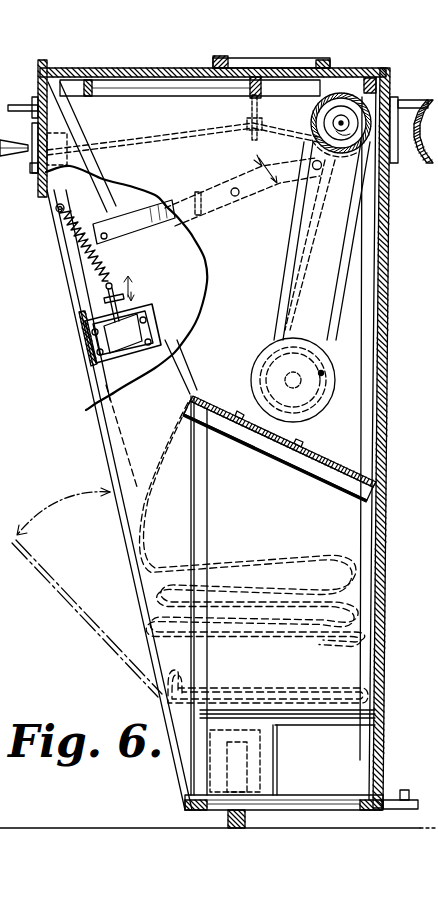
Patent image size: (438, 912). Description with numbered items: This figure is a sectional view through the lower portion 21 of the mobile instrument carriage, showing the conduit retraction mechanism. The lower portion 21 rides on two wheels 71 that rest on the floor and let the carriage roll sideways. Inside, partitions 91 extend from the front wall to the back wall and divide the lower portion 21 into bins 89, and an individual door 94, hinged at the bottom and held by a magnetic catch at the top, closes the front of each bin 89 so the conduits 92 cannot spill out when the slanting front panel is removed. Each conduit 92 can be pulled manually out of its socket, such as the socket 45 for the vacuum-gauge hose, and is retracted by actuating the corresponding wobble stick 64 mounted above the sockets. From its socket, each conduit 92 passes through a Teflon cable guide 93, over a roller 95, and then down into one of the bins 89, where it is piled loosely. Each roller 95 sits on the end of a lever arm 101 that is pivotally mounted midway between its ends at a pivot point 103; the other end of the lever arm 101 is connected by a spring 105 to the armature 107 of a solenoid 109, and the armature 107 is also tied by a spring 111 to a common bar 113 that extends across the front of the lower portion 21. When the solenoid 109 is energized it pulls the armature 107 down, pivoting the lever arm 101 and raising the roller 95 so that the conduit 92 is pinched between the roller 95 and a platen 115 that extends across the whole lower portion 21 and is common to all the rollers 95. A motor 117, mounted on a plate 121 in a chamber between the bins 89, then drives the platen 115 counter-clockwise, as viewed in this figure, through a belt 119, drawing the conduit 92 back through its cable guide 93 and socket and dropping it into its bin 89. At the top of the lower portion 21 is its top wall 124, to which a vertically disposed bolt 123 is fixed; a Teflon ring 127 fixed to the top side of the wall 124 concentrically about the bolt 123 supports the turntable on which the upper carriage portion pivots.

The lower portion of the carriage 21 is at (90, 416).
The socket 45 is at (34, 168).
The wobble stick 64 is at (27, 105).
The wheels 71 is at (233, 822).
The bins 89 is at (11, 398).
The partitions 91 is at (130, 455).
The conduit 92 is at (206, 127).
The Teflon cable guide 93 is at (252, 130).
The door 94 is at (97, 638).
The roller 95 is at (303, 204).
The lever arm 101 is at (148, 183).
The pivot point 103 is at (233, 188).
The spring 105 is at (101, 272).
The armature 107 is at (106, 304).
The solenoid 109 is at (104, 350).
The spring 111 is at (84, 264).
The common bar 113 is at (56, 211).
The platen 115 is at (386, 93).
The motor 117 is at (336, 379).
The belt 119 is at (292, 255).
The plate 121 is at (262, 443).
The bolt 123 is at (235, 52).
The top wall 124 is at (355, 68).
The Teflon ring 127 is at (290, 61).